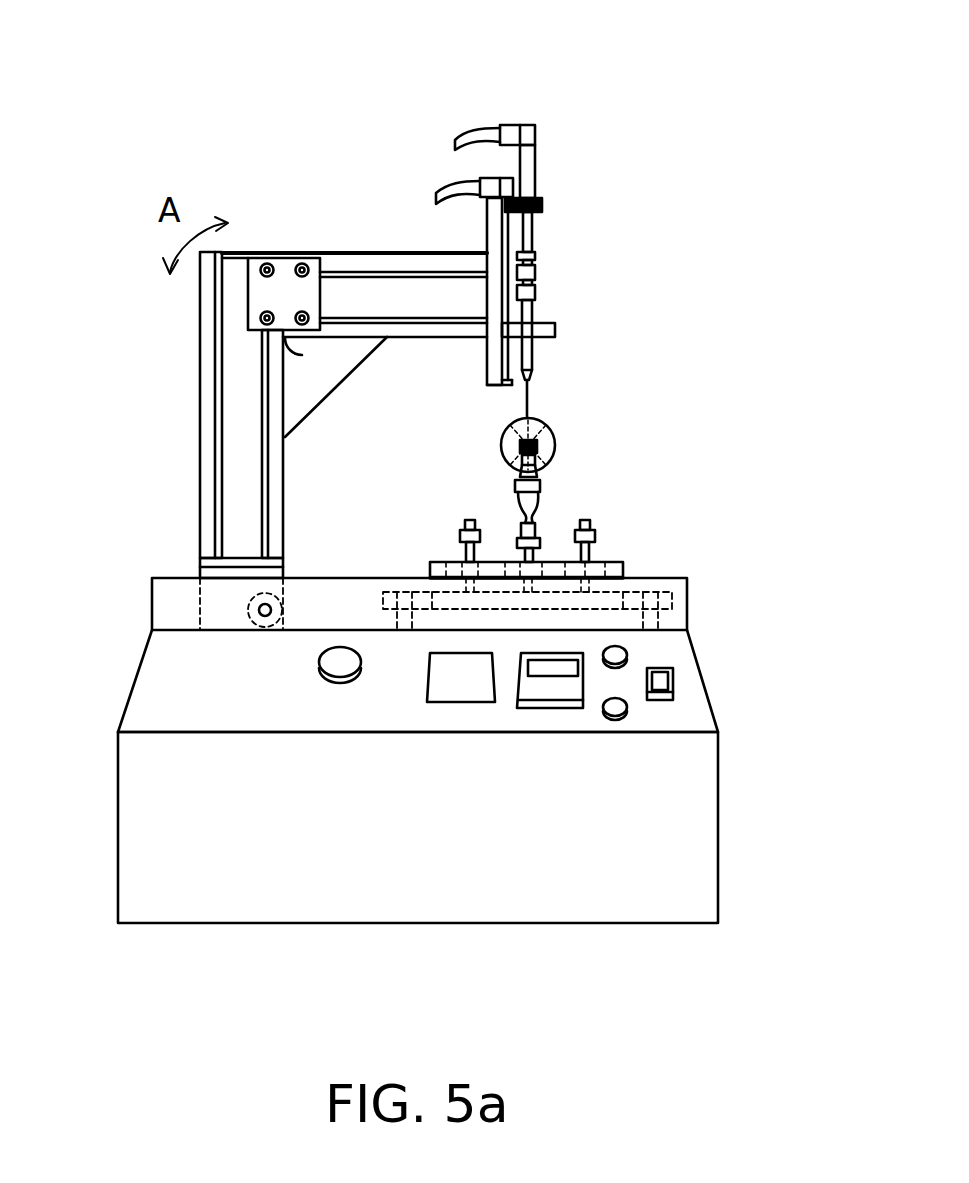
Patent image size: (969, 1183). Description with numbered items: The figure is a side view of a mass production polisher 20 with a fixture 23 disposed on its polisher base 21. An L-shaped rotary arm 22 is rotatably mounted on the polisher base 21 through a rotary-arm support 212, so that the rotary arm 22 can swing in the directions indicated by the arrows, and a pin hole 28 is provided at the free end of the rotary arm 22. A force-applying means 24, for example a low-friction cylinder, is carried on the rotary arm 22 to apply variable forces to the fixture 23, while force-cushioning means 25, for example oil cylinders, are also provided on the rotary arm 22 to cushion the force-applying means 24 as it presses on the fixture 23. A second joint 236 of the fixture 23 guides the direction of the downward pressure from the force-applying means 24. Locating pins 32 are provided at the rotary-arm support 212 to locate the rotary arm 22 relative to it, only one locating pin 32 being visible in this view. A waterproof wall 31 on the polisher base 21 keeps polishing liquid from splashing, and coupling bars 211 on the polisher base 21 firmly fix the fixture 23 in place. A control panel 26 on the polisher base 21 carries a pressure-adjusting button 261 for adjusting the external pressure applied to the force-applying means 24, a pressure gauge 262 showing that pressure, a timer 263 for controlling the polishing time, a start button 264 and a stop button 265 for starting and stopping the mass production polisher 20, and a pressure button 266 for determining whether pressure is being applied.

The mass production polisher 20 is at (62, 54).
The polisher base 21 is at (118, 845).
The L-shaped rotary arm 22 is at (215, 455).
The fixture 23 is at (625, 567).
The force-applying means 24 is at (535, 142).
The force-cushioning means 25 is at (532, 360).
The control panel 26 is at (207, 668).
The pin hole 28 is at (553, 445).
The waterproof wall 31 is at (682, 600).
The locating pin 32 is at (258, 610).
The coupling bar 211 is at (652, 620).
The rotary-arm support 212 is at (222, 590).
The second joint 236 is at (540, 505).
The pressure-adjusting button 261 is at (343, 680).
The pressure gauge 262 is at (472, 690).
The timer 263 is at (553, 690).
The start button 264 is at (622, 655).
The stop button 265 is at (622, 707).
The pressure button 266 is at (673, 680).